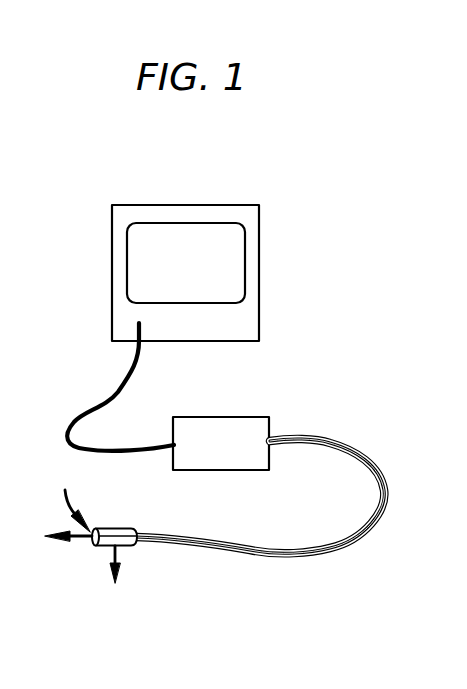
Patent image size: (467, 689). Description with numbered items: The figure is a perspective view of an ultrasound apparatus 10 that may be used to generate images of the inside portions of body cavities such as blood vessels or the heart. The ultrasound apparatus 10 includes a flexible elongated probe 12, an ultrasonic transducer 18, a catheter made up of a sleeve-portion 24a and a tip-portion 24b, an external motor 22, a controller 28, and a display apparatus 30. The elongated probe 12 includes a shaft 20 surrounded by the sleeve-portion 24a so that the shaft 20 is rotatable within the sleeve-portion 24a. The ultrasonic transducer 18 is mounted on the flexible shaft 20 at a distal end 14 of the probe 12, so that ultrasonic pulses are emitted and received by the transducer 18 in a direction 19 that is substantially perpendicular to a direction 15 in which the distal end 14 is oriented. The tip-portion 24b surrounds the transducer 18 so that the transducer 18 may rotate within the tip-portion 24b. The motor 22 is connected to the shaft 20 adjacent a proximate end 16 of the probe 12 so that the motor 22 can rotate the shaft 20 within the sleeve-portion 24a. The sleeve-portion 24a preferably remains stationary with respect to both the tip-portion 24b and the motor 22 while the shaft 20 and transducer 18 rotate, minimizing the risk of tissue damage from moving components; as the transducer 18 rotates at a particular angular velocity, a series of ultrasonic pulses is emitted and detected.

The ultrasound apparatus 10 is at (334, 219).
The flexible elongated probe 12 is at (225, 590).
The distal end 14 is at (75, 499).
The direction 15 is at (76, 541).
The proximate end 16 is at (278, 437).
The ultrasonic transducer 18 is at (137, 530).
The direction 19 is at (121, 551).
The shaft 20 is at (388, 488).
The external motor 22 is at (221, 417).
The sleeve-portion 24a is at (336, 444).
The tip-portion 24b is at (108, 528).
The controller 28 is at (274, 301).
The display apparatus 30 is at (245, 247).